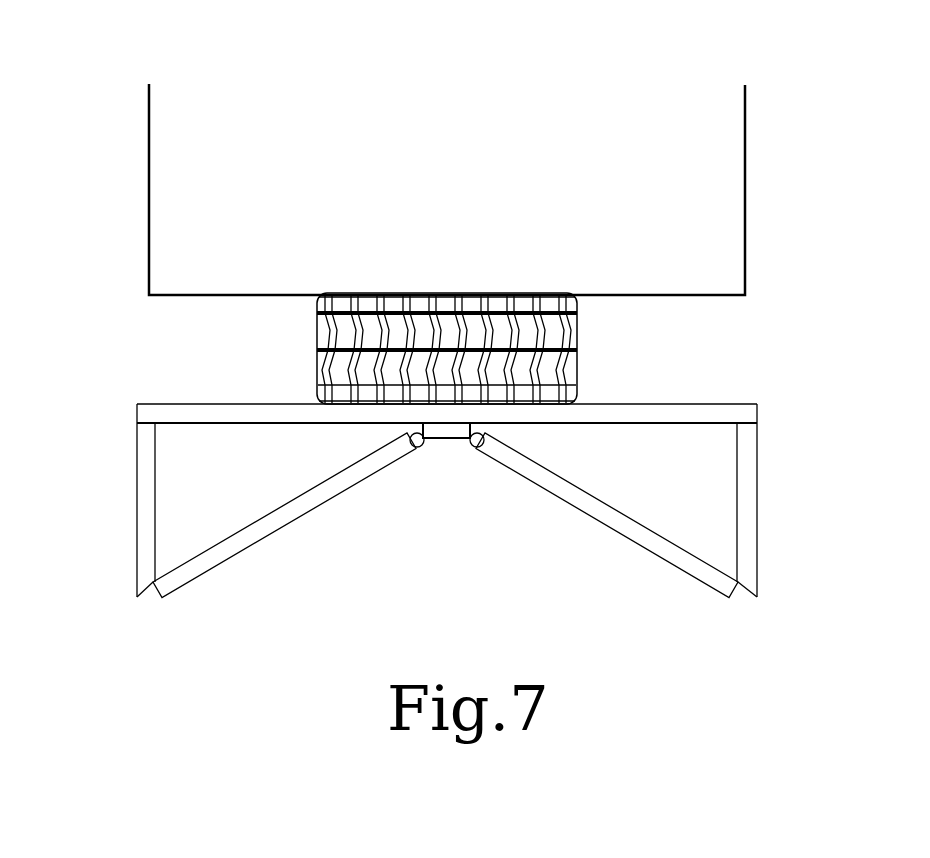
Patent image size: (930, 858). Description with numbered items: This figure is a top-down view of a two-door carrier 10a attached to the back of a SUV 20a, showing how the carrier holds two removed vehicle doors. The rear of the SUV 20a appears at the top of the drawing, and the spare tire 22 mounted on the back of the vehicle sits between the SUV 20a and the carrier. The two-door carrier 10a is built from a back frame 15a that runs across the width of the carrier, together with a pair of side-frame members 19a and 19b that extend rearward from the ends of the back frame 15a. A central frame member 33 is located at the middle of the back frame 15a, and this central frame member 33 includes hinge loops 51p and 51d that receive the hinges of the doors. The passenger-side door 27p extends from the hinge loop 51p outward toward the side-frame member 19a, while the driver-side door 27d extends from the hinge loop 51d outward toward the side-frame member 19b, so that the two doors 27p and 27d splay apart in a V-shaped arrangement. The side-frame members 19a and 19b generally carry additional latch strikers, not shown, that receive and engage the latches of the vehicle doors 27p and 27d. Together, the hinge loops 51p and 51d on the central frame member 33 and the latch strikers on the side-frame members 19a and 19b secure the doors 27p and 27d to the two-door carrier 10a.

The SUV 20a is at (148, 138).
The spare tire 22 is at (577, 332).
The back frame 15a is at (673, 415).
The two-door carrier 10a is at (438, 436).
The side-frame member 19a is at (148, 533).
The side-frame member 19b is at (747, 455).
The central frame member 33 is at (447, 432).
The hinge loop 51p is at (425, 457).
The hinge loop 51d is at (462, 458).
The passenger-side door 27p is at (242, 542).
The driver-side door 27d is at (570, 495).